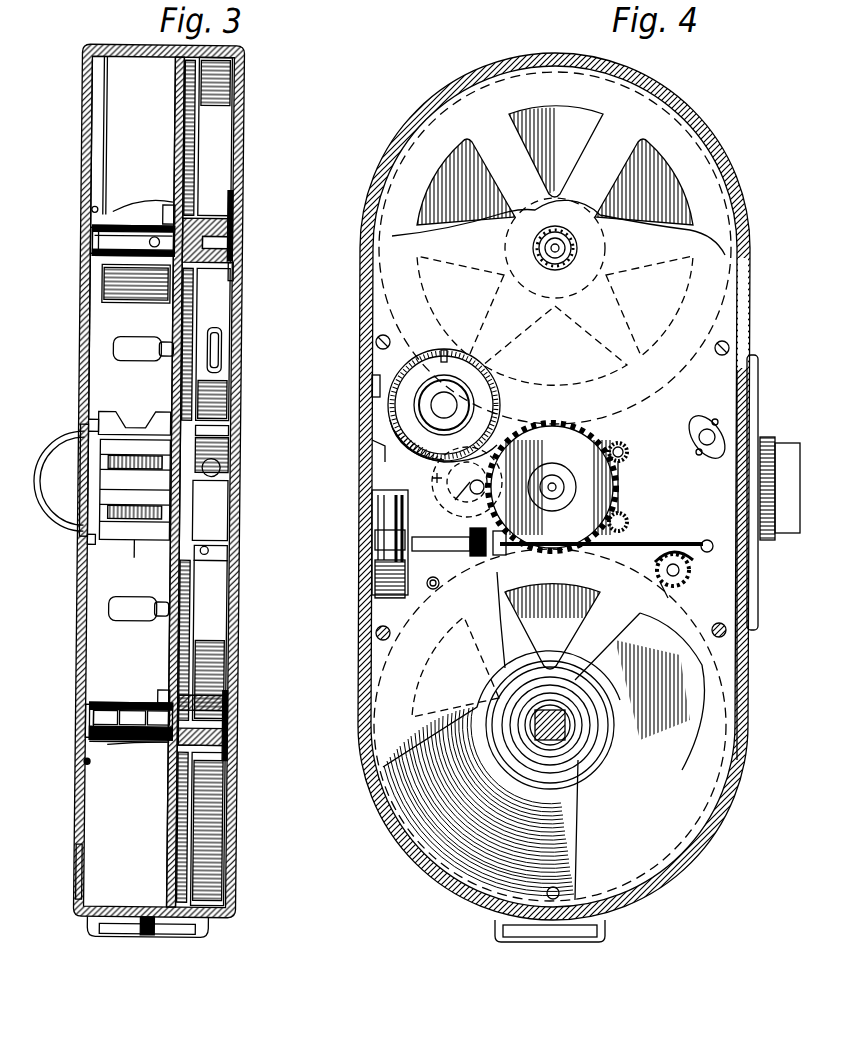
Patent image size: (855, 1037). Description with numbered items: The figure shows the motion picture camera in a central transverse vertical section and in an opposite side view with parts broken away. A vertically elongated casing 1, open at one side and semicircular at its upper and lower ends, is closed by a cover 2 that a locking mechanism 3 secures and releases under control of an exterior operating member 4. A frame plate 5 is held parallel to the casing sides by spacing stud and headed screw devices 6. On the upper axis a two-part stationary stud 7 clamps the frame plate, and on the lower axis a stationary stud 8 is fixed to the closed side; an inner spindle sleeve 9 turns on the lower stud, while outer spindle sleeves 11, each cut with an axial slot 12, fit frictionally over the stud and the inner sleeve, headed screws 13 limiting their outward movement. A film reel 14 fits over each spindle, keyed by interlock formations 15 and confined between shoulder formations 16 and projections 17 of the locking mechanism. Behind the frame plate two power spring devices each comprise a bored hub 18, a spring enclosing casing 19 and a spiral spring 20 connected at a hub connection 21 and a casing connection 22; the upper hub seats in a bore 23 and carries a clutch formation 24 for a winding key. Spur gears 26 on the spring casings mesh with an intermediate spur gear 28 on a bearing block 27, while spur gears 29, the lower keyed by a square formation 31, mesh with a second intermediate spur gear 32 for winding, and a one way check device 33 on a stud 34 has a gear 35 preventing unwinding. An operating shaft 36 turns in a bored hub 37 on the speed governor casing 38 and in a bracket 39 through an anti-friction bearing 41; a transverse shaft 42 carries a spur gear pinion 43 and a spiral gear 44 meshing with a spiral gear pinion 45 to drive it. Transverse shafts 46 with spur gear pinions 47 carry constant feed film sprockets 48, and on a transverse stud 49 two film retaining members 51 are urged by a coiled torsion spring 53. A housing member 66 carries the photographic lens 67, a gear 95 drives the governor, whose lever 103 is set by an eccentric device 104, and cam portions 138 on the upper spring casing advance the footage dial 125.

In FIG. 3, the casing 1 is at (241, 104).
In FIG. 4, the casing 1 is at (445, 100).
In FIG. 3, the cover 2 is at (80, 158).
In FIG. 3, the locking mechanism 3 is at (86, 425).
In FIG. 3, the operating member 4 is at (80, 530).
In FIG. 3, the frame plate 5 is at (183, 938).
In FIG. 4, the frame plate 5 is at (745, 374).
In FIG. 4, the spacing stud and headed screw devices 6 is at (729, 345).
In FIG. 3, the stationary stud 7 is at (231, 240).
In FIG. 4, the stationary stud 7 is at (578, 247).
In FIG. 3, the stationary stud 8 is at (230, 720).
In FIG. 4, the stationary stud 8 is at (568, 728).
In FIG. 3, the inner spindle sleeve 9 is at (92, 742).
In FIG. 3, the spindle sleeves 11 is at (100, 228).
In FIG. 3, the axial slot 12 is at (92, 238).
In FIG. 3, the headed screws 13 is at (95, 252).
In FIG. 3, the film reel 14 is at (98, 102).
In FIG. 3, the interlock formations 15 is at (162, 218).
In FIG. 3, the shoulder formations 16 is at (172, 210).
In FIG. 3, the projections 17 is at (90, 208).
In FIG. 3, the bored hub 18 is at (232, 216).
In FIG. 4, the bored hub 18 is at (525, 712).
In FIG. 3, the spring enclosing casing 19 is at (215, 165).
In FIG. 4, the spring enclosing casing 19 is at (690, 212).
In FIG. 3, the spiral spring 20 is at (232, 812).
In FIG. 4, the spiral spring 20 is at (452, 850).
In FIG. 4, the spring end connection to hub 21 is at (575, 702).
In FIG. 4, the spring end connection to spring casing 22 is at (550, 900).
In FIG. 3, the bore 23 is at (232, 270).
In FIG. 4, the bore 23 is at (533, 242).
In FIG. 3, the clutch formation 24 is at (231, 248).
In FIG. 4, the clutch formation 24 is at (562, 228).
In FIG. 3, the spur gears 26 is at (183, 100).
In FIG. 3, the bearing block 27 is at (222, 500).
In FIG. 4, the bearing block 27 is at (554, 478).
In FIG. 3, the intermediate spur gear 28 is at (231, 432).
In FIG. 4, the intermediate spur gear 28 is at (626, 446).
In FIG. 3, the spur gears 29 is at (232, 320).
In FIG. 4, the spur gears 29 is at (690, 150).
In FIG. 4, the square formation 31 is at (580, 738).
In FIG. 3, the second intermediate spur gear 32 is at (231, 446).
In FIG. 4, the second intermediate spur gear 32 is at (600, 489).
In FIG. 4, the spring brake automatic one way check device 33 is at (692, 566).
In FIG. 4, the stud 34 is at (688, 580).
In FIG. 4, the gear 35 is at (676, 592).
In FIG. 3, the operating shaft 36 is at (230, 552).
In FIG. 4, the operating shaft 36 is at (665, 545).
In FIG. 4, the bored hub 37 is at (438, 590).
In FIG. 4, the speed governor casing 38 is at (372, 584).
In FIG. 4, the bracket 39 is at (510, 548).
In FIG. 4, the anti-friction bearing 41 is at (480, 558).
In FIG. 4, the transverse shaft 42 is at (472, 478).
In FIG. 4, the spur gear pinion 43 is at (468, 492).
In FIG. 4, the spiral gear 44 is at (432, 478).
In FIG. 4, the spiral gear pinion 45 is at (420, 537).
In FIG. 3, the transverse shafts 46 is at (221, 466).
In FIG. 4, the transverse shafts 46 is at (629, 447).
In FIG. 4, the spur gear pinions 47 is at (630, 474).
In FIG. 3, the constant feed film sprockets 48 is at (125, 415).
In FIG. 3, the transverse stud 49 is at (92, 502).
In FIG. 3, the film retaining members 51 is at (140, 548).
In FIG. 3, the coiled torsion spring 53 is at (88, 542).
In FIG. 4, the housing member 66 is at (760, 402).
In FIG. 4, the photographic lens 67 is at (785, 440).
In FIG. 4, the gear 95 is at (375, 540).
In FIG. 4, the lever 103 is at (372, 459).
In FIG. 4, the eccentric device 104 is at (372, 386).
In FIG. 4, the footage dial 125 is at (455, 355).
In FIG. 3, the cam portions 138 is at (222, 350).